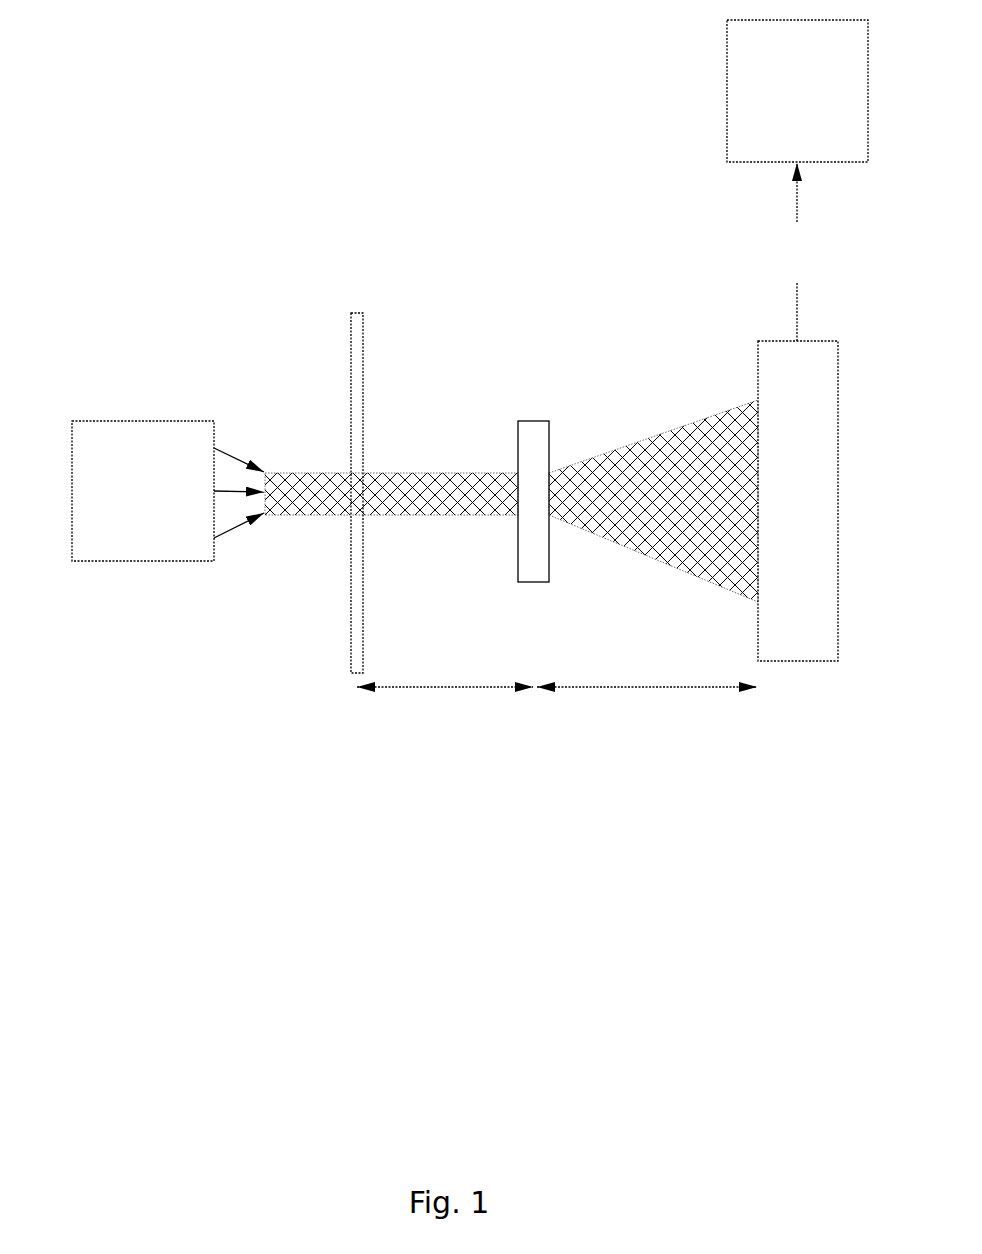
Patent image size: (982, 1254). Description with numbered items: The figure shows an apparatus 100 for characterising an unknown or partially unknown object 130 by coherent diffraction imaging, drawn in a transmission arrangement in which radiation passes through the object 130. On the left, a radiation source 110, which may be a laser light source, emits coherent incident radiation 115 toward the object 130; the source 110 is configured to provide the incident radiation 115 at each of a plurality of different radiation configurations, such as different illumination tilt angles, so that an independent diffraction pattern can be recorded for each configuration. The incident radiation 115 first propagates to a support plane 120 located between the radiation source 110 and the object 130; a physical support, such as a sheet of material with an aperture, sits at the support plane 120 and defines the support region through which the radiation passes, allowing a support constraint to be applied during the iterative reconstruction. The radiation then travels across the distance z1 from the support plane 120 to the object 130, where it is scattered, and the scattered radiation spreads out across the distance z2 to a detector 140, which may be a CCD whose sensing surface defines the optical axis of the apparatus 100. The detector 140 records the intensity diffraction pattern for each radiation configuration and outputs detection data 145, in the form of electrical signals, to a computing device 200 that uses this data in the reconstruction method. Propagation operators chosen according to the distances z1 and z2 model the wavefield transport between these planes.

The apparatus 100 is at (197, 313).
The radiation source 110 is at (117, 527).
The coherent incident radiation 115 is at (303, 513).
The support plane 120 is at (355, 313).
The object 130 is at (532, 422).
The detector 140 is at (785, 598).
The detection data 145 is at (796, 252).
The computing device 200 is at (797, 91).
The distance z1 is at (437, 687).
The distance z2 is at (623, 687).